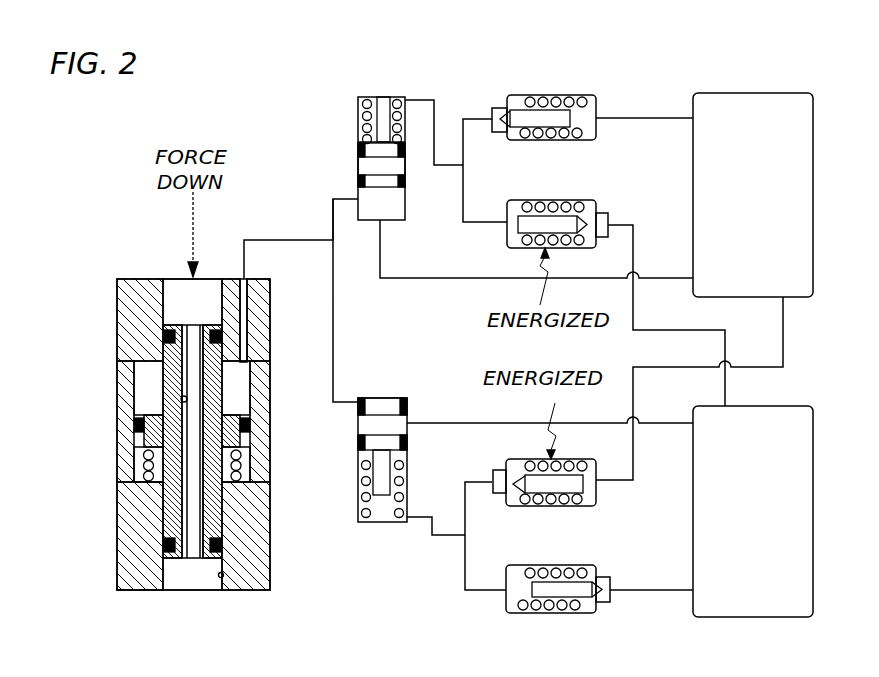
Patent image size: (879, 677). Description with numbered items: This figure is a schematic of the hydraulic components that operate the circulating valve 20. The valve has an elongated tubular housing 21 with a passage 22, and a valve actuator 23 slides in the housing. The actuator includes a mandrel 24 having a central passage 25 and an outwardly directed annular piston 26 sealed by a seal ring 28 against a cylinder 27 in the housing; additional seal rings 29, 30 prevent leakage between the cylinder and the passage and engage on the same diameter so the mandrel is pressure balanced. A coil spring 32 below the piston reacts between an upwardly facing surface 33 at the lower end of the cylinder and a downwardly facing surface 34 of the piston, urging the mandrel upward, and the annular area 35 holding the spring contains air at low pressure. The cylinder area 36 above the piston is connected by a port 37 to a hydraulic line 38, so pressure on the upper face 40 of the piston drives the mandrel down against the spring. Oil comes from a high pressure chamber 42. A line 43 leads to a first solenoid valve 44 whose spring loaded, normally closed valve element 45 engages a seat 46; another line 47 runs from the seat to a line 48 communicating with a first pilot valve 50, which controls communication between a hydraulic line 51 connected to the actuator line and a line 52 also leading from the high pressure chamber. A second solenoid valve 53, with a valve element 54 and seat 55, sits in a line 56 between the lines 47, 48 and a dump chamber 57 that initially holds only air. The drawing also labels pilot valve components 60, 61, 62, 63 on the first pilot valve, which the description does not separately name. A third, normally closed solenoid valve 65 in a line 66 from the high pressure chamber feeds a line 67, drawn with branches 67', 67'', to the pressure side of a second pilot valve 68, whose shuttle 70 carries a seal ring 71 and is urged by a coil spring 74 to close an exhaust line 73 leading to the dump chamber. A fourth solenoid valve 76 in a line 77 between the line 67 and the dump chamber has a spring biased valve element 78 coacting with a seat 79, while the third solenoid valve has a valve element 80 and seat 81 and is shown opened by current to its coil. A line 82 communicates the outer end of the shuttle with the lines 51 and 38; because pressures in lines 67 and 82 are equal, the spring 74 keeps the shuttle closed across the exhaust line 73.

The circulating valve 20 is at (100, 347).
The elongated tubular housing 21 is at (140, 540).
The passage 22 is at (206, 315).
The valve actuator 23 is at (228, 520).
The mandrel 24 is at (215, 370).
The central passage 25 is at (182, 398).
The annular piston 26 is at (246, 445).
The cylinder 27 is at (246, 396).
The seal ring 28 is at (252, 425).
The seal ring 29 is at (165, 336).
The seal ring 30 is at (125, 585).
The coil spring 32 is at (244, 466).
The upwardly facing surface 33 is at (150, 483).
The downwardly facing surface 34 is at (148, 460).
The annular area 35 is at (226, 480).
The cylinder area 36 is at (140, 378).
The port 37 is at (246, 335).
The hydraulic line 38 is at (292, 240).
The upper face 40 is at (137, 422).
The high pressure chamber 42 is at (744, 240).
The line 43 is at (660, 117).
The first solenoid valve 44 is at (550, 95).
The valve element 45 is at (545, 128).
The seat 46 is at (494, 108).
The line 47 is at (463, 116).
The line 48 is at (428, 97).
The first pilot valve 50 is at (350, 97).
The hydraulic line 51 is at (333, 199).
The line 52 is at (452, 280).
The second solenoid valve 53 is at (512, 200).
The valve element 54 is at (553, 216).
The seat 55 is at (606, 213).
The line 56 is at (634, 310).
The dump chamber 57 is at (741, 565).
The valve spool land 60 is at (406, 165).
The valve seal 61 is at (358, 150).
The valve seal 62 is at (406, 181).
The valve spring section 63 is at (360, 118).
The third solenoid valve 65 is at (598, 500).
The line 66 is at (660, 367).
The line 67 is at (436, 547).
The fluid line branch 67' is at (471, 488).
The fluid line branch 67'' is at (477, 586).
The second pilot valve 68 is at (414, 400).
The shuttle 70 is at (408, 440).
The seal ring 71 is at (372, 398).
The exhaust line 73 is at (600, 423).
The coil spring 74 is at (368, 522).
The fourth solenoid valve 76 is at (577, 565).
The line 77 is at (663, 588).
The valve element 78 is at (545, 613).
The seat 79 is at (604, 604).
The valve element 80 is at (548, 506).
The seat 81 is at (496, 494).
The line 82 is at (334, 318).